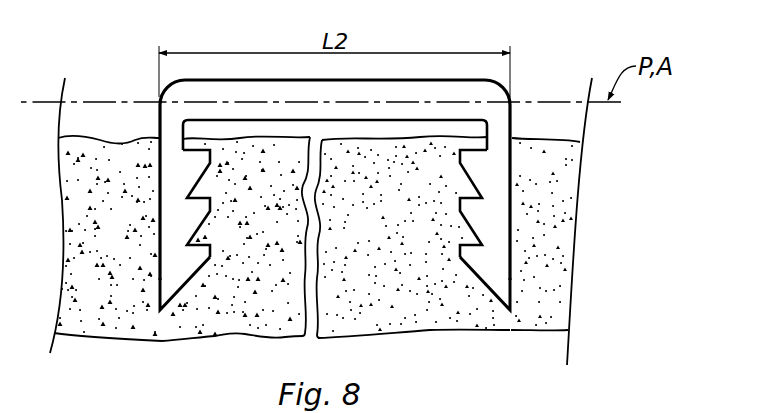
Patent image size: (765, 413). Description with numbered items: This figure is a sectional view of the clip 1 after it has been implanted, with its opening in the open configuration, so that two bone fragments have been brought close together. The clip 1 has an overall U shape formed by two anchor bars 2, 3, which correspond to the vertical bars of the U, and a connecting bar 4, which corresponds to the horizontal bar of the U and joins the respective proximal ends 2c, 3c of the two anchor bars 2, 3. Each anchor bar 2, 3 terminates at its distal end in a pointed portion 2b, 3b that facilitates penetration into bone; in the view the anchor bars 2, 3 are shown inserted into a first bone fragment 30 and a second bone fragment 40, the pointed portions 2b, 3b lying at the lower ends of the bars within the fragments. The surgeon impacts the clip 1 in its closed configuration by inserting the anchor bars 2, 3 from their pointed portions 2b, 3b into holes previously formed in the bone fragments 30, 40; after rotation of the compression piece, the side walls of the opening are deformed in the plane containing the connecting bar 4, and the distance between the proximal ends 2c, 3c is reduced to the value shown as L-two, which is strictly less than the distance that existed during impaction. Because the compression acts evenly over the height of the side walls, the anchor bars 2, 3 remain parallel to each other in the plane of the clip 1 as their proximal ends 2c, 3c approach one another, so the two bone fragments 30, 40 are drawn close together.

The clip 1 is at (225, 75).
The anchor bar 2 is at (157, 168).
The anchor bar 3 is at (514, 168).
The connecting bar 4 is at (398, 78).
The pointed portion 2b is at (160, 312).
The pointed portion 3b is at (507, 312).
The proximal end 2c is at (159, 97).
The proximal end 3c is at (512, 95).
The first bone fragment 30 is at (238, 340).
The second bone fragment 40 is at (433, 334).